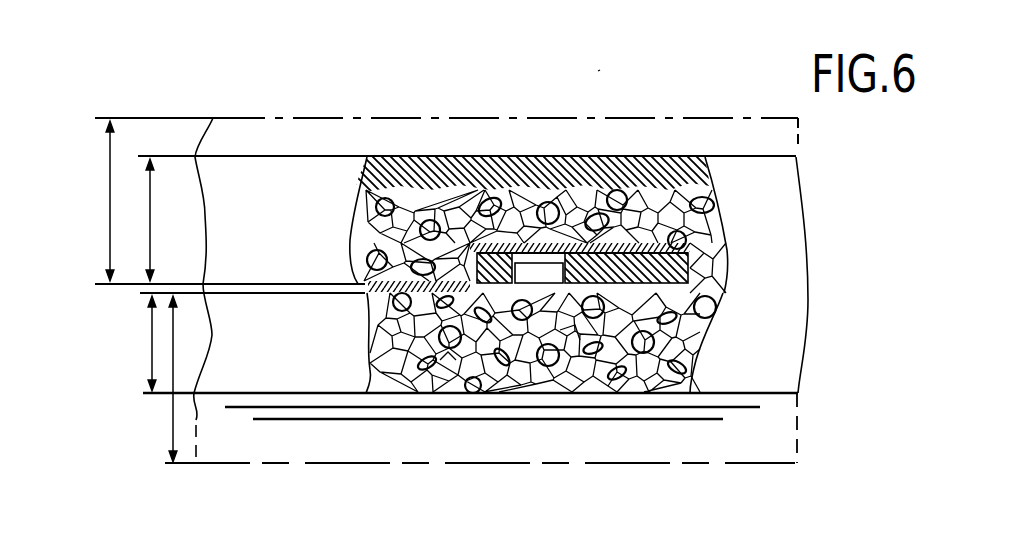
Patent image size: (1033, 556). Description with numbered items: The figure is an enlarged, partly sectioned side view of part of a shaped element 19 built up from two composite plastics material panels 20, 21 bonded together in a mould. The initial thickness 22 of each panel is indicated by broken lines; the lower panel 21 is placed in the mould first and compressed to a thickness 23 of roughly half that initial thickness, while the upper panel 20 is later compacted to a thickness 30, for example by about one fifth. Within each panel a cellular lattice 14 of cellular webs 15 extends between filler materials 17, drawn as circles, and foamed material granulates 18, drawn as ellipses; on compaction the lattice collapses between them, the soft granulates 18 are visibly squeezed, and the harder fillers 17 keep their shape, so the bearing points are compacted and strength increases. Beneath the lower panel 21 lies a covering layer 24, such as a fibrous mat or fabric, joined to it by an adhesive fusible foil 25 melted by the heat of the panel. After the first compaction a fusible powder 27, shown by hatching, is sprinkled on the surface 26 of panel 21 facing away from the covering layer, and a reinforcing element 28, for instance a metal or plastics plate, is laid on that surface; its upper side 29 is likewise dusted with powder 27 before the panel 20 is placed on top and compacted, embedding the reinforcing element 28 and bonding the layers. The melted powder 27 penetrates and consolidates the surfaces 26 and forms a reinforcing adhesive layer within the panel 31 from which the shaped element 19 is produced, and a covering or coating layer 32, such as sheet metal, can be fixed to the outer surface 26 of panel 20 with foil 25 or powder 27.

The cellular lattice 14 is at (397, 370).
The cellular webs 15 is at (447, 365).
The filler materials 17 is at (562, 214).
The foamed material granulates 18 is at (620, 197).
The shaped element 19 is at (597, 71).
The composite plastics material panel 20 is at (340, 118).
The composite plastics material panel 21 is at (786, 339).
The initial thickness 22 is at (100, 177).
The thickness 23 is at (141, 343).
The covering layer 24 is at (623, 409).
The adhesive fusible foil 25 is at (667, 400).
The surface 26 is at (726, 298).
The fusible powder 27 is at (412, 194).
The reinforcing element 28 is at (726, 250).
The upper side 29 is at (572, 345).
The thickness 30 is at (139, 201).
The panel 31 is at (186, 146).
The covering or coating layer 32 is at (512, 215).